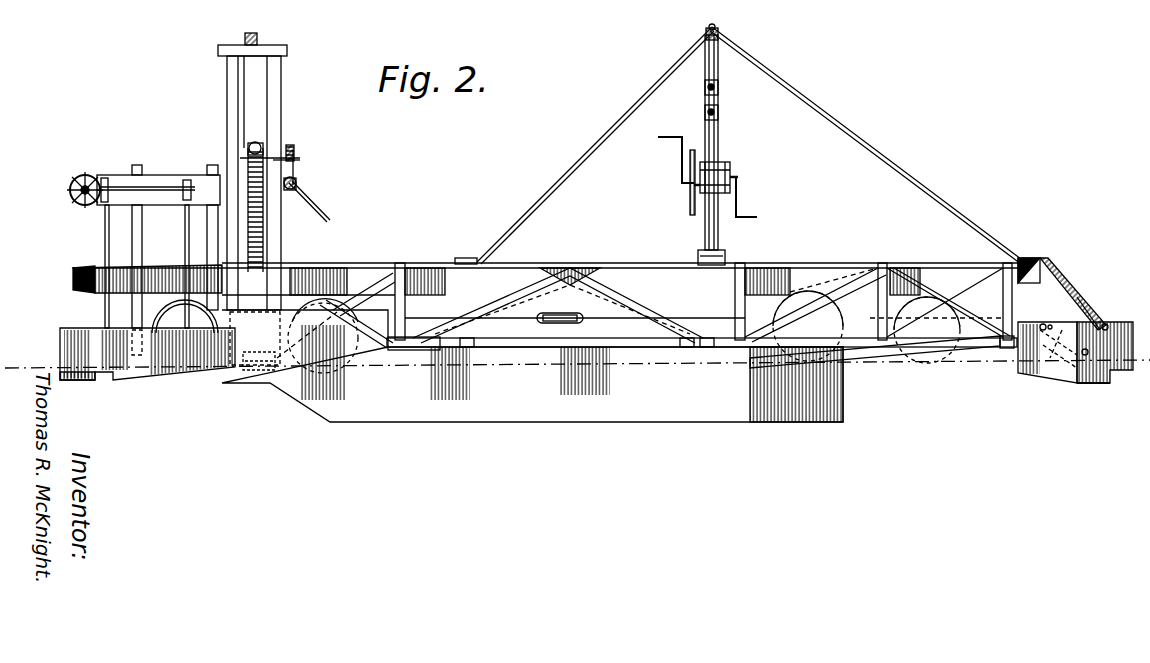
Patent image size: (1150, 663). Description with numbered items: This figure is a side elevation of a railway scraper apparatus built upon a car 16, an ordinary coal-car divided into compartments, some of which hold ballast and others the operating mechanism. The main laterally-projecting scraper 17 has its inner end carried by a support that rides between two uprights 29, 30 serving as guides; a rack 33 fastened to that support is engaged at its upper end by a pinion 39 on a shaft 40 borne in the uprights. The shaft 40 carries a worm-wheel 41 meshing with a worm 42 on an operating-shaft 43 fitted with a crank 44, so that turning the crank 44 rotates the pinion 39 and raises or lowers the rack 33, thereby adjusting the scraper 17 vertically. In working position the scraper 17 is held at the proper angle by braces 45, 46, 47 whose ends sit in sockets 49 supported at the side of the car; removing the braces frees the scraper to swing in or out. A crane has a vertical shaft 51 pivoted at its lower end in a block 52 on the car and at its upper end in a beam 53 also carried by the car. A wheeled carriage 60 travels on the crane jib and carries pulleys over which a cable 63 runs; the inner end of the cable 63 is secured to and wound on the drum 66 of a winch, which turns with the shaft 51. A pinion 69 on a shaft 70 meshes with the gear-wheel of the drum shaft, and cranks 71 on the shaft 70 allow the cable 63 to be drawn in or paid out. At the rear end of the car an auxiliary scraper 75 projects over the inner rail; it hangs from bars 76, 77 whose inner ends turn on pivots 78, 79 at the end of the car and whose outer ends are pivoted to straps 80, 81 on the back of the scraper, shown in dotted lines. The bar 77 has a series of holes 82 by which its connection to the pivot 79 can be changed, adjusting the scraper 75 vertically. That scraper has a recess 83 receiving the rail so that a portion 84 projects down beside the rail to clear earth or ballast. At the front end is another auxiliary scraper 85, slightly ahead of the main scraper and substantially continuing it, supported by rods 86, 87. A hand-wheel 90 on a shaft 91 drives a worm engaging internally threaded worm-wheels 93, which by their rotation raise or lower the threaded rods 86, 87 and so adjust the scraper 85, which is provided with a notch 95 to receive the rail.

The car 16 is at (580, 268).
The main scraper 17 is at (575, 418).
The upright 29 is at (254, 102).
The upright 30 is at (277, 112).
The rack 33 is at (264, 233).
The pinion 39 is at (255, 143).
The shaft 40 is at (247, 157).
The worm-wheel 41 is at (294, 150).
The worm 42 is at (297, 183).
The operating-shaft 43 is at (297, 187).
The crank 44 is at (314, 205).
The brace 45 is at (437, 347).
The brace 46 is at (687, 347).
The brace 47 is at (893, 365).
The socket 49 is at (468, 347).
The vertical shaft of crane 51 is at (719, 237).
The block 52 is at (726, 260).
The beam 53 is at (719, 32).
The wheeled carriage 60 is at (719, 88).
The cable 63 is at (719, 118).
The drum 66 is at (722, 167).
The pinion 69 is at (692, 215).
The shaft 70 is at (736, 179).
The crank 71 is at (668, 160).
The auxiliary scraper 75 is at (1045, 362).
The bar 76 is at (1051, 325).
The bar 77 is at (1079, 300).
The pivot 78 is at (1042, 324).
The pivot 79 is at (1040, 257).
The strap 80 is at (1084, 356).
The strap 81 is at (1108, 325).
The holes 82 is at (1072, 290).
The recess 83 is at (1125, 372).
The projecting portion 84 is at (1095, 385).
The auxiliary scraper 85 is at (147, 378).
The rod 86 is at (105, 237).
The rod 87 is at (185, 237).
The hand-wheel 90 is at (68, 190).
The shaft 91 is at (158, 188).
The worm-wheel 93 is at (105, 180).
The notch 95 is at (100, 380).